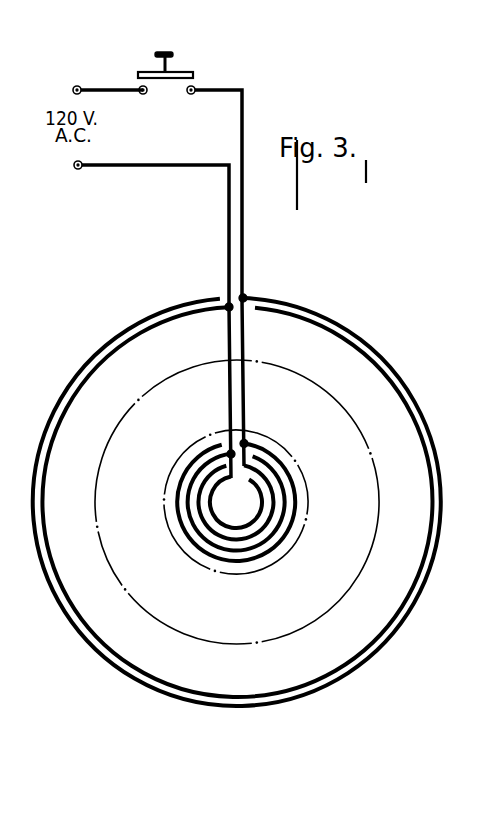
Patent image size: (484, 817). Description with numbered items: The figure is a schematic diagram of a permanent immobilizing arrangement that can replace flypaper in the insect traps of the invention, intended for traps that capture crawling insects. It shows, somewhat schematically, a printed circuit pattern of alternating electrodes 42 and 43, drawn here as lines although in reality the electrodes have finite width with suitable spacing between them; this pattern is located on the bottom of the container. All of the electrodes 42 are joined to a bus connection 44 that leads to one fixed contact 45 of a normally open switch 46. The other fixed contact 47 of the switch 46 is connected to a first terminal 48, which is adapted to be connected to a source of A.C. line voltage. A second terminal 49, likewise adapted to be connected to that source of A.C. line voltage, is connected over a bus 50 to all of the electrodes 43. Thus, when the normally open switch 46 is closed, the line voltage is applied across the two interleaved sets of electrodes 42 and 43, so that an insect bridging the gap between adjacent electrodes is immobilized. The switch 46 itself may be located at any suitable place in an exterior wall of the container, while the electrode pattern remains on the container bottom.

The electrodes 42 is at (322, 315).
The electrodes 43 is at (367, 357).
The bus connection 44 is at (245, 215).
The fixed contact 45 is at (190, 96).
The normally open switch 46 is at (170, 65).
The fixed contact 47 is at (145, 96).
The first terminal 48 is at (77, 84).
The second terminal 49 is at (80, 170).
The bus 50 is at (148, 167).